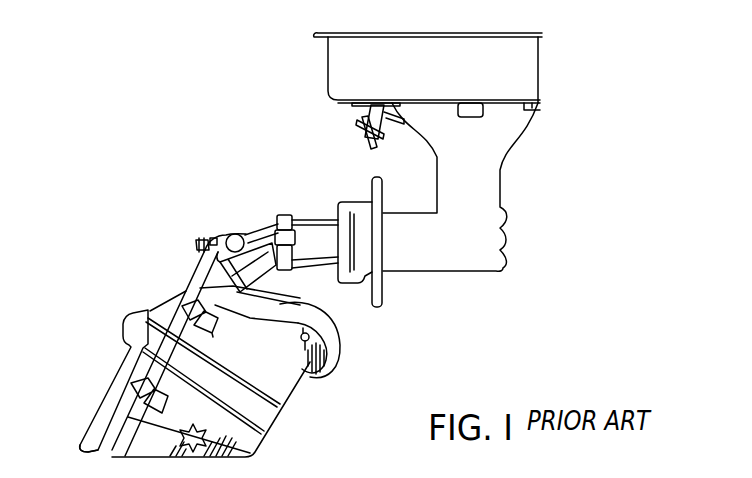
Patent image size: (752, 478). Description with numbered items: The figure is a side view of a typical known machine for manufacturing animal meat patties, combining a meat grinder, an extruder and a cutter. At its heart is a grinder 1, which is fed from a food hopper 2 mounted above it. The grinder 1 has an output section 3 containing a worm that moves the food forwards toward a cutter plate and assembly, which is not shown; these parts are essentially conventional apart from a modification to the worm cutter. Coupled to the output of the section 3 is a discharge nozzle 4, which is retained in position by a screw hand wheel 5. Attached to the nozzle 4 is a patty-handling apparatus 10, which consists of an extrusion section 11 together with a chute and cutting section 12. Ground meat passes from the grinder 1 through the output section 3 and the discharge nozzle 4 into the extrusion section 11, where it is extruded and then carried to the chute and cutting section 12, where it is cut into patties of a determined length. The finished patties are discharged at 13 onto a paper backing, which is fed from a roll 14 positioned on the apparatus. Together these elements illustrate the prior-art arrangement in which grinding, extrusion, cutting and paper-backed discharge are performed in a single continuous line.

The grinder 1 is at (507, 193).
The food hopper 2 is at (342, 48).
The output section 3 is at (323, 193).
The discharge nozzle 4 is at (292, 213).
The screw hand wheel 5 is at (380, 287).
The patty-handling apparatus 10 is at (117, 273).
The extrusion section 11 is at (252, 232).
The chute and cutting section 12 is at (118, 378).
The discharge point 13 is at (78, 450).
The roll 14 is at (334, 378).